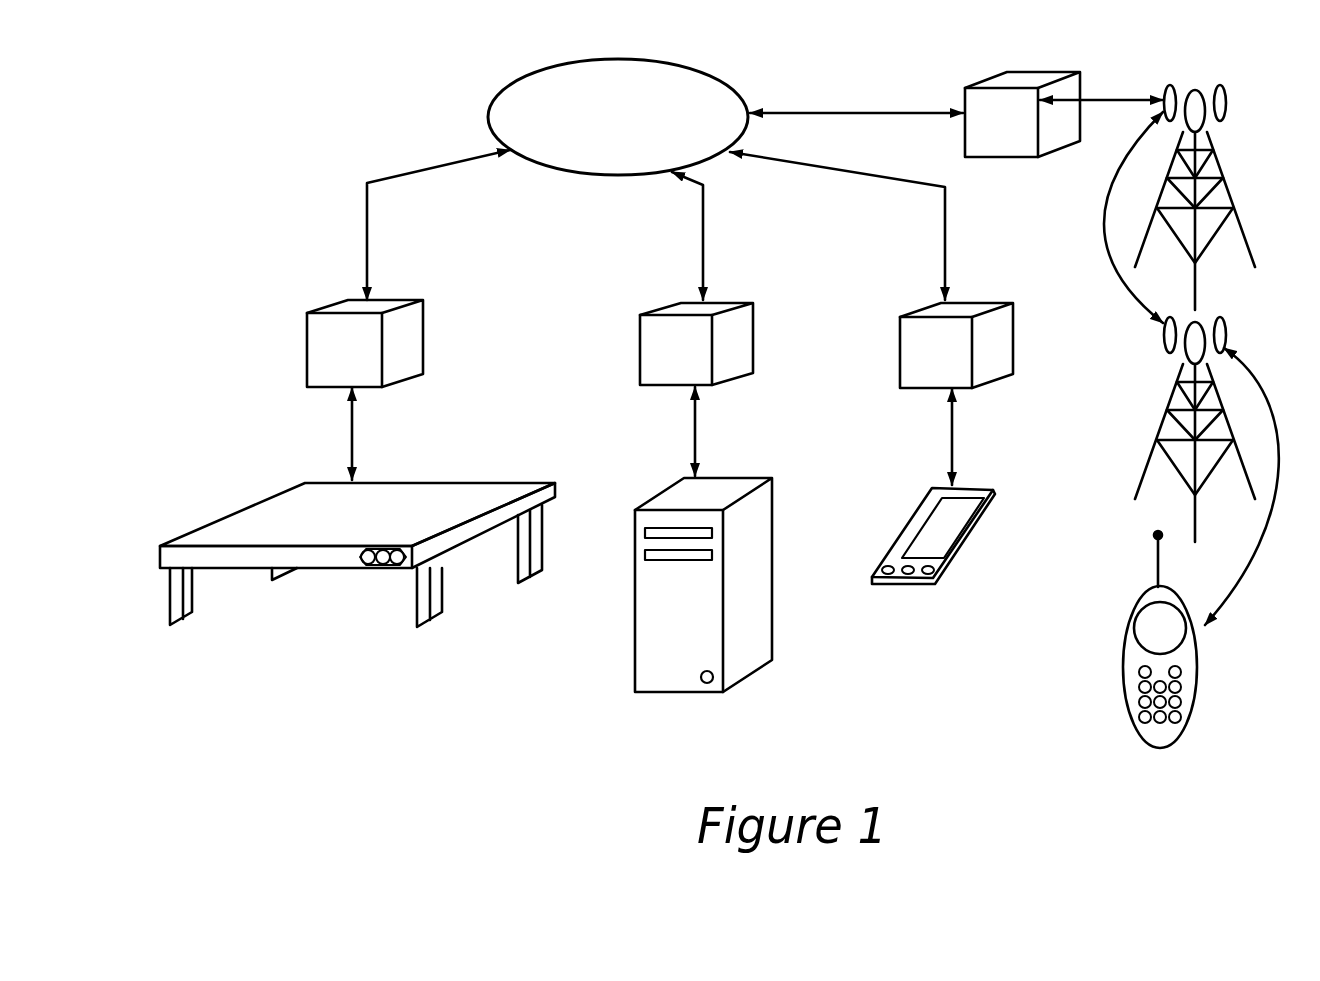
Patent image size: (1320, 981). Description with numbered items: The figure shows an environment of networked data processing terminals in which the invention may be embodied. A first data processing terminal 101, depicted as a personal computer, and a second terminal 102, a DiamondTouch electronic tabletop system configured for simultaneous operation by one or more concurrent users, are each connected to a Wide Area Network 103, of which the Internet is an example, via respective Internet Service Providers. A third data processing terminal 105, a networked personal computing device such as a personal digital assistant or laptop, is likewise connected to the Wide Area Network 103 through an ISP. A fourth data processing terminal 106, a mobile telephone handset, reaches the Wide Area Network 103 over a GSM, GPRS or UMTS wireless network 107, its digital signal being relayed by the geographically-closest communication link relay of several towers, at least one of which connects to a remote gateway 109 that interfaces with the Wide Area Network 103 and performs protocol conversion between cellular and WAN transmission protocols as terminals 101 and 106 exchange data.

The first data processing terminal 101 is at (670, 575).
The electronic tabletop terminal 102 is at (335, 562).
The wide area network 103 is at (605, 163).
The third data processing terminal 105 is at (908, 583).
The fourth data processing terminal 106 is at (1136, 600).
The wireless network 107 is at (1125, 100).
The remote gateway 109 is at (1003, 73).